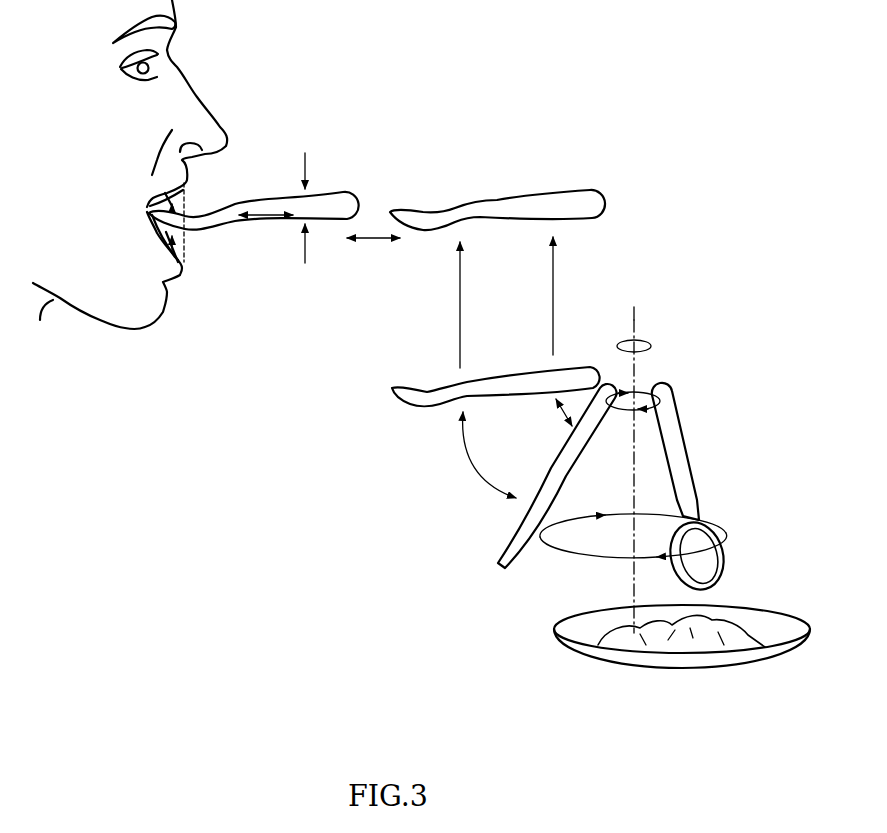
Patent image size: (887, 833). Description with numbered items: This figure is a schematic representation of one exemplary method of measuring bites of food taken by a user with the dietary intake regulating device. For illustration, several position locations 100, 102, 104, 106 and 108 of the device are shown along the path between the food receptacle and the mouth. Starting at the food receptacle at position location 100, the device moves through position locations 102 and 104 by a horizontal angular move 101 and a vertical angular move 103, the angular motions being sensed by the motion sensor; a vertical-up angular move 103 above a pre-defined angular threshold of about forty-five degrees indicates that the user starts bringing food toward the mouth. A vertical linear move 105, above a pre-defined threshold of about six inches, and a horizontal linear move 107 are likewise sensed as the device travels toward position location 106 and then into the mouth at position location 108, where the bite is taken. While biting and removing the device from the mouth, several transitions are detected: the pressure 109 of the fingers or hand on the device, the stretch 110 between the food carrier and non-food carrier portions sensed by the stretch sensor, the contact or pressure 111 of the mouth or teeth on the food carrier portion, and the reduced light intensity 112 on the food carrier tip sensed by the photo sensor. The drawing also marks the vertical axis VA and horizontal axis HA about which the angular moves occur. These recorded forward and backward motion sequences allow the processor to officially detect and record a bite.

The position location 100 is at (725, 570).
The horizontal angular move 101 is at (603, 558).
The position location 102 is at (510, 550).
The vertical angular move 103 is at (480, 468).
The position location 104 is at (437, 390).
The vertical linear move 105 is at (552, 310).
The position location 106 is at (515, 198).
The horizontal linear move 107 is at (373, 238).
The position location 108 is at (327, 220).
The pressure of the fingers or hand 109 is at (310, 167).
The stretch 110 is at (267, 220).
The pressure of the mouth 111 is at (183, 197).
The light intensity variation 112 is at (180, 233).
The vertical axis VA is at (634, 315).
The horizontal axis HA is at (652, 343).